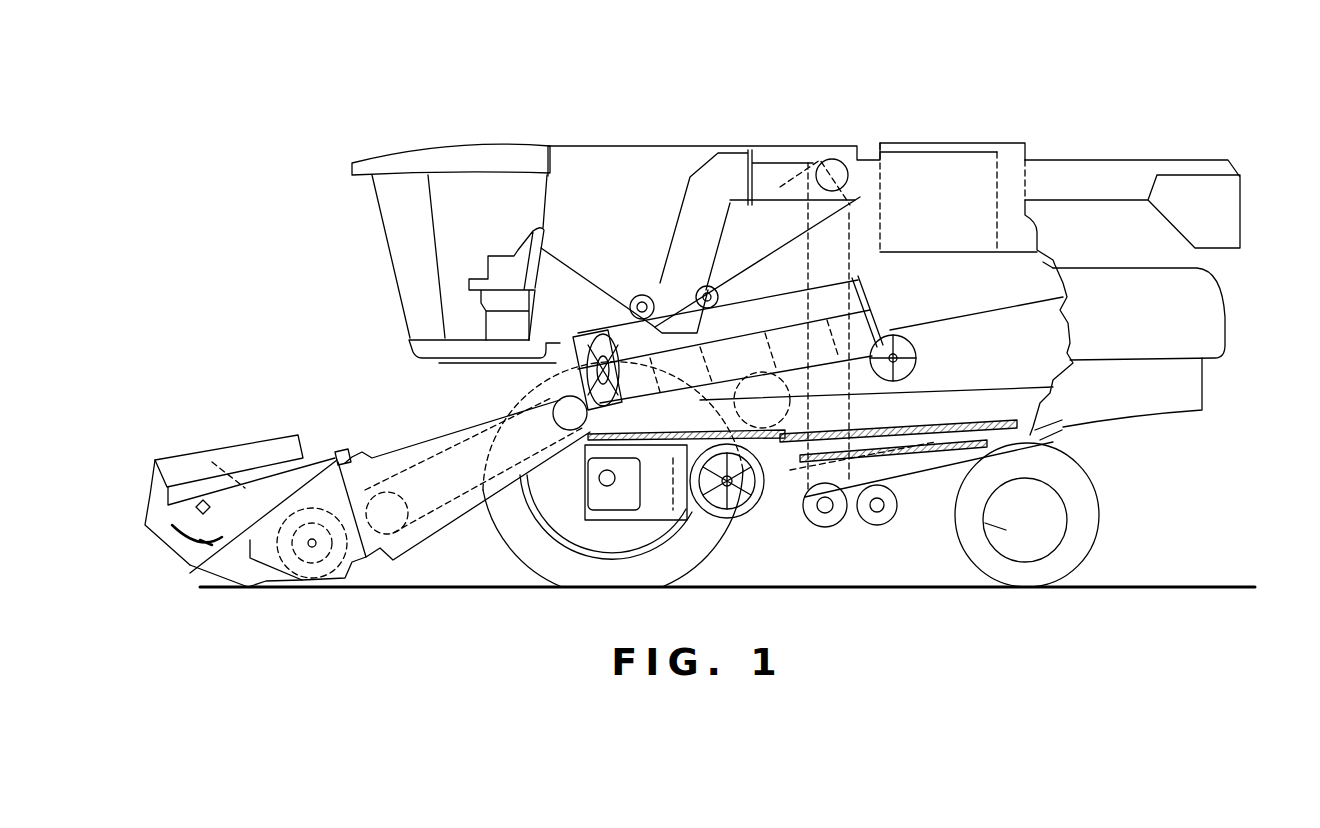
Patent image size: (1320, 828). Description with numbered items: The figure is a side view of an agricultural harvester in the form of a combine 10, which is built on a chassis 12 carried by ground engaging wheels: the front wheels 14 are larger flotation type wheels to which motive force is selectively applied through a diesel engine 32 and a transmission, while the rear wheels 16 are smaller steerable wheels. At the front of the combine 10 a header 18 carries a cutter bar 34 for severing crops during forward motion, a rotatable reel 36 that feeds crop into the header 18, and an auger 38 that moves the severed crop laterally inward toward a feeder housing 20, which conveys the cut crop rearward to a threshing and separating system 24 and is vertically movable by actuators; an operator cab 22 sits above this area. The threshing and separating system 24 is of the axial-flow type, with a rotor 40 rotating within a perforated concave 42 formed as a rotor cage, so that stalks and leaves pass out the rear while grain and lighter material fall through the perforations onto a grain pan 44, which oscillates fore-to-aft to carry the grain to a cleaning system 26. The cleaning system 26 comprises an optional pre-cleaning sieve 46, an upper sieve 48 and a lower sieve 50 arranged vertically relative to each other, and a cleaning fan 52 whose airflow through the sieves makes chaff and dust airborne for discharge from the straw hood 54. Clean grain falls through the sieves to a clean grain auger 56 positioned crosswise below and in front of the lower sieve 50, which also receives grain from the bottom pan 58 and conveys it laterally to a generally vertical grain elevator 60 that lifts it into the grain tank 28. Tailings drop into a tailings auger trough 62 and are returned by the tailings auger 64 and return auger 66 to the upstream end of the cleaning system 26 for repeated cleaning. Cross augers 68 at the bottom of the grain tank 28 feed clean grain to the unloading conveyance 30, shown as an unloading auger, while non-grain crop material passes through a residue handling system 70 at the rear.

The combine 10 is at (440, 128).
The chassis 12 is at (1040, 440).
The front wheels 14 is at (520, 552).
The rear wheels 16 is at (1100, 535).
The header 18 is at (231, 424).
The feeder housing 20 is at (423, 438).
The operator cab 22 is at (382, 240).
The threshing and separating system 24 is at (515, 381).
The cleaning system 26 is at (785, 530).
The grain tank 28 is at (600, 146).
The unloading conveyance 30 is at (1110, 163).
The diesel engine 32 is at (935, 152).
The cutter bar 34 is at (258, 588).
The reel 36 is at (185, 510).
The auger 38 is at (316, 572).
The rotor 40 is at (590, 340).
The concave 42 is at (762, 320).
The grain pan 44 is at (580, 458).
The pre-cleaning sieve 46 is at (860, 432).
The upper sieve 48 is at (950, 432).
The lower sieve 50 is at (918, 460).
The cleaning fan 52 is at (722, 515).
The straw hood 54 is at (1208, 307).
The clean grain auger 56 is at (828, 527).
The bottom pan 58 is at (990, 497).
The grain elevator 60 is at (862, 262).
The tailings auger trough 62 is at (1006, 531).
The tailings auger 64 is at (875, 527).
The return auger 66 is at (769, 399).
The cross augers 68 is at (641, 295).
The residue handling system 70 is at (1170, 428).